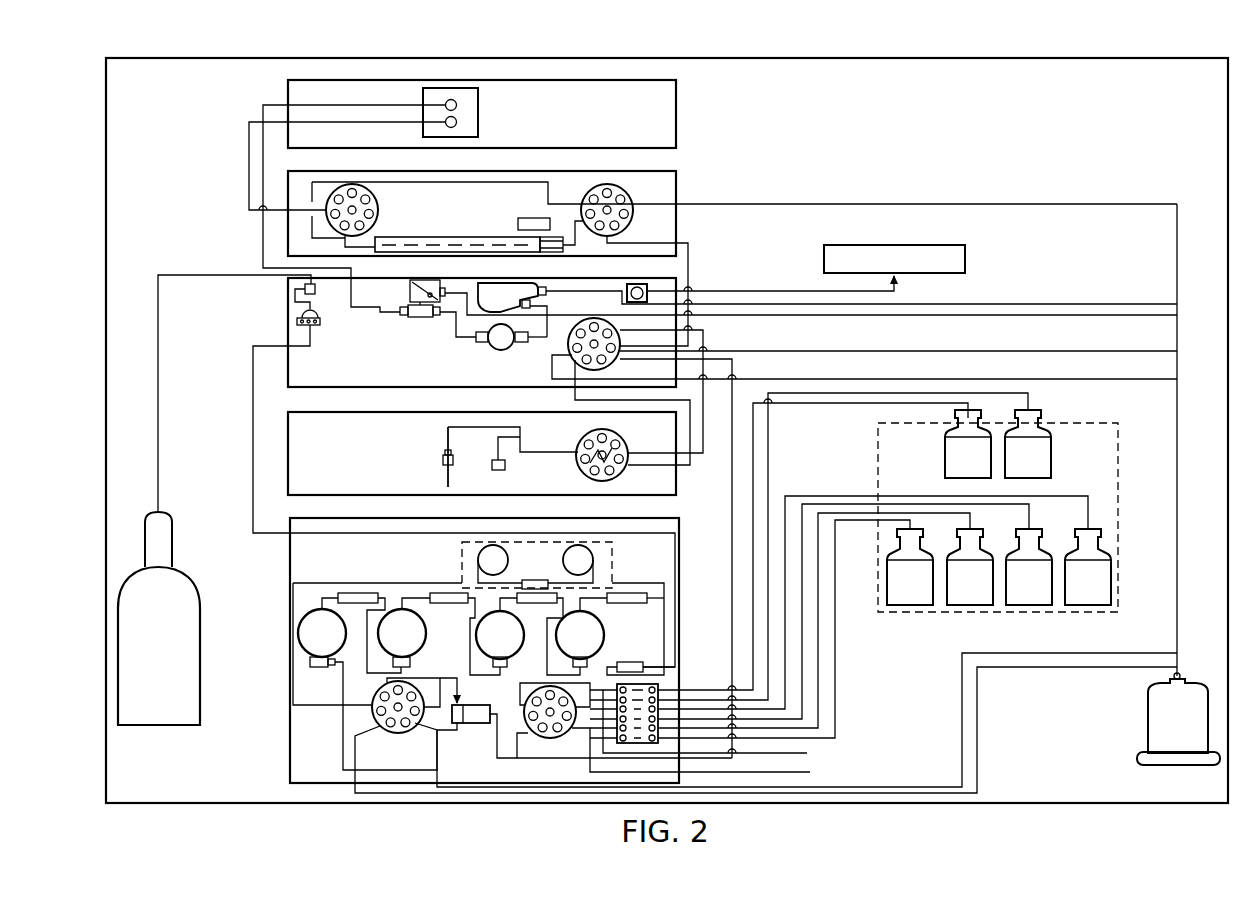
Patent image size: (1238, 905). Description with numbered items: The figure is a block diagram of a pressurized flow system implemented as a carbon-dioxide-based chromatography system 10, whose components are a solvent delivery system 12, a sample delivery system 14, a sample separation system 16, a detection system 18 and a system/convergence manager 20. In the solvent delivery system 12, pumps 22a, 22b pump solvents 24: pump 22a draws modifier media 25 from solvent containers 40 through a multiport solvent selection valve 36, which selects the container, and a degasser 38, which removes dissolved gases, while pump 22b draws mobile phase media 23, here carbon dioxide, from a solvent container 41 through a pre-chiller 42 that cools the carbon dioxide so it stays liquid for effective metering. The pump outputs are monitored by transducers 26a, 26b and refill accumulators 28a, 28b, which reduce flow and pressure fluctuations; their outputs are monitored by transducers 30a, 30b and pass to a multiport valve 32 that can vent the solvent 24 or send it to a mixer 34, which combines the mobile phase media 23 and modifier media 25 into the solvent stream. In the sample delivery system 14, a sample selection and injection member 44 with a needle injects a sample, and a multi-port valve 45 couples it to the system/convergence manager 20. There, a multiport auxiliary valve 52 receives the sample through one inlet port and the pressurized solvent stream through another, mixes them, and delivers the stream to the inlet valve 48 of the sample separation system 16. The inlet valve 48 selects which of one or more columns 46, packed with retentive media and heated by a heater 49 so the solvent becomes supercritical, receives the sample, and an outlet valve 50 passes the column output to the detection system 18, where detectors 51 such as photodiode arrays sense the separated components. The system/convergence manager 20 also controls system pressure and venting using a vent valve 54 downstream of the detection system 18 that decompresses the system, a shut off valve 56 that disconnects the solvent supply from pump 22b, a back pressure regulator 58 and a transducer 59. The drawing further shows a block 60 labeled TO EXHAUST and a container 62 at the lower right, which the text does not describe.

The chromatography system 10 is at (708, 56).
The solvent delivery system 12 is at (297, 768).
The sample delivery system 14 is at (297, 447).
The sample separation system 16 is at (641, 194).
The detection system 18 is at (641, 107).
The system/convergence manager 20 is at (297, 378).
The pump 22a is at (307, 644).
The pump 22b is at (485, 646).
The mobile phase media 23 is at (146, 650).
The solvent 24 is at (96, 583).
The modifier media 25 is at (899, 590).
The transducer 26a is at (356, 592).
The transducer 26b is at (532, 580).
The accumulator 28a is at (387, 644).
The accumulator 28b is at (565, 646).
The transducer 30a is at (448, 604).
The transducer 30b is at (622, 596).
The multiport valve 32 is at (370, 712).
The mixer 34 is at (478, 726).
The solvent selection valve 36 is at (548, 740).
The degasser 38 is at (660, 690).
The solvent container 40 is at (980, 562).
The solvent container 41 is at (129, 552).
The pre-chiller 42 is at (615, 552).
The sample selection and injection member 44 is at (436, 452).
The multi-port valve 45 is at (624, 440).
The column 46 is at (443, 240).
The inlet valve 48 is at (640, 214).
The heater 49 is at (535, 222).
The outlet valve 50 is at (332, 188).
The detector 51 is at (480, 116).
The auxiliary valve 52 is at (572, 347).
The vent valve 54 is at (406, 294).
The shut off valve 56 is at (316, 296).
The back pressure regulator 58 is at (512, 296).
The transducer 59 is at (488, 345).
The exhaust 60 is at (968, 263).
The waste container 62 is at (1146, 728).